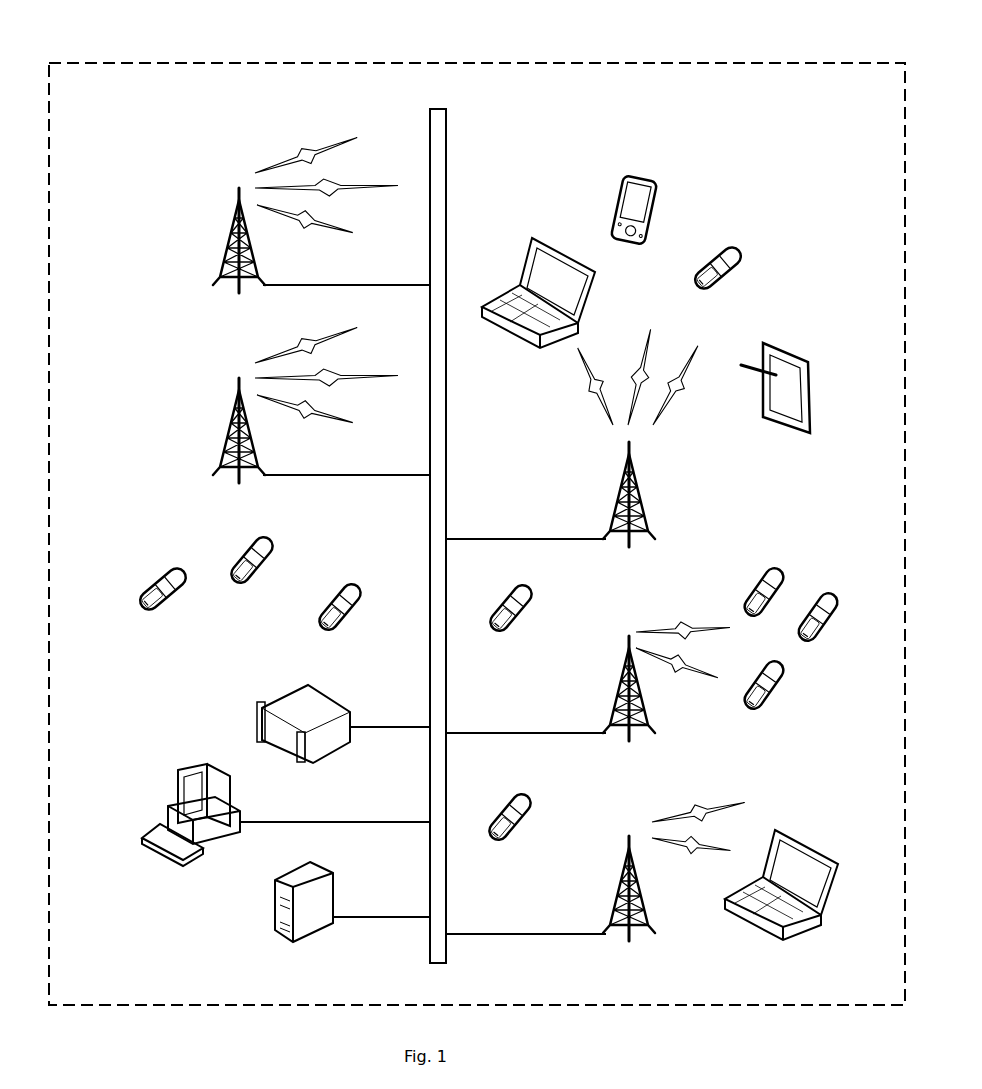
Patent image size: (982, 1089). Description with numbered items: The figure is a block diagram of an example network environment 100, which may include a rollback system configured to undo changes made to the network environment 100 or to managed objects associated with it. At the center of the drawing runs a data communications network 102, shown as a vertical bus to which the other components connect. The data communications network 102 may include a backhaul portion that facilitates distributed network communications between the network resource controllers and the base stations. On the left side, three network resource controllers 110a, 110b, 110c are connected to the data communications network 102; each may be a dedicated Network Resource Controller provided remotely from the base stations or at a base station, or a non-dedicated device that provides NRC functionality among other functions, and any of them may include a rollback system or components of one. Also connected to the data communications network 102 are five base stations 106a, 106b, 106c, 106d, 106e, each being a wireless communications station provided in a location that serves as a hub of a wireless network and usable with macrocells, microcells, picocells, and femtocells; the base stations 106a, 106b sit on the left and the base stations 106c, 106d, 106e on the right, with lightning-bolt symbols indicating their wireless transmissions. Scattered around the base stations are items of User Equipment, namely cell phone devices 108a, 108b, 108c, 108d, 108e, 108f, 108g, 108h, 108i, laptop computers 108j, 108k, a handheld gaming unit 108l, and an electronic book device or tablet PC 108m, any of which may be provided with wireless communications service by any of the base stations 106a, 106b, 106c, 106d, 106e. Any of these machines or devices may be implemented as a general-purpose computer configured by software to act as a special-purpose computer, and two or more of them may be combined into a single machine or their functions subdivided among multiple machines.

The network environment 100 is at (335, 37).
The data communications network 102 is at (430, 125).
The base station 106a is at (232, 238).
The base station 106b is at (226, 428).
The base station 106c is at (620, 878).
The base station 106d is at (617, 692).
The base station 106e is at (645, 508).
The cell phone device 108a is at (146, 589).
The cell phone device 108b is at (246, 545).
The cell phone device 108c is at (321, 632).
The cell phone device 108d is at (537, 799).
The cell phone device 108e is at (778, 704).
The cell phone device 108f is at (835, 632).
The cell phone device 108g is at (788, 573).
The cell phone device 108h is at (537, 593).
The cell phone device 108i is at (748, 255).
The laptop computer 108j is at (800, 846).
The laptop computer 108k is at (534, 240).
The handheld gaming unit 108l is at (658, 200).
The electronic book device or tablet PC 108m is at (814, 354).
The network resource controller 110a is at (255, 722).
The network resource controller 110b is at (175, 767).
The network resource controller 110c is at (274, 920).